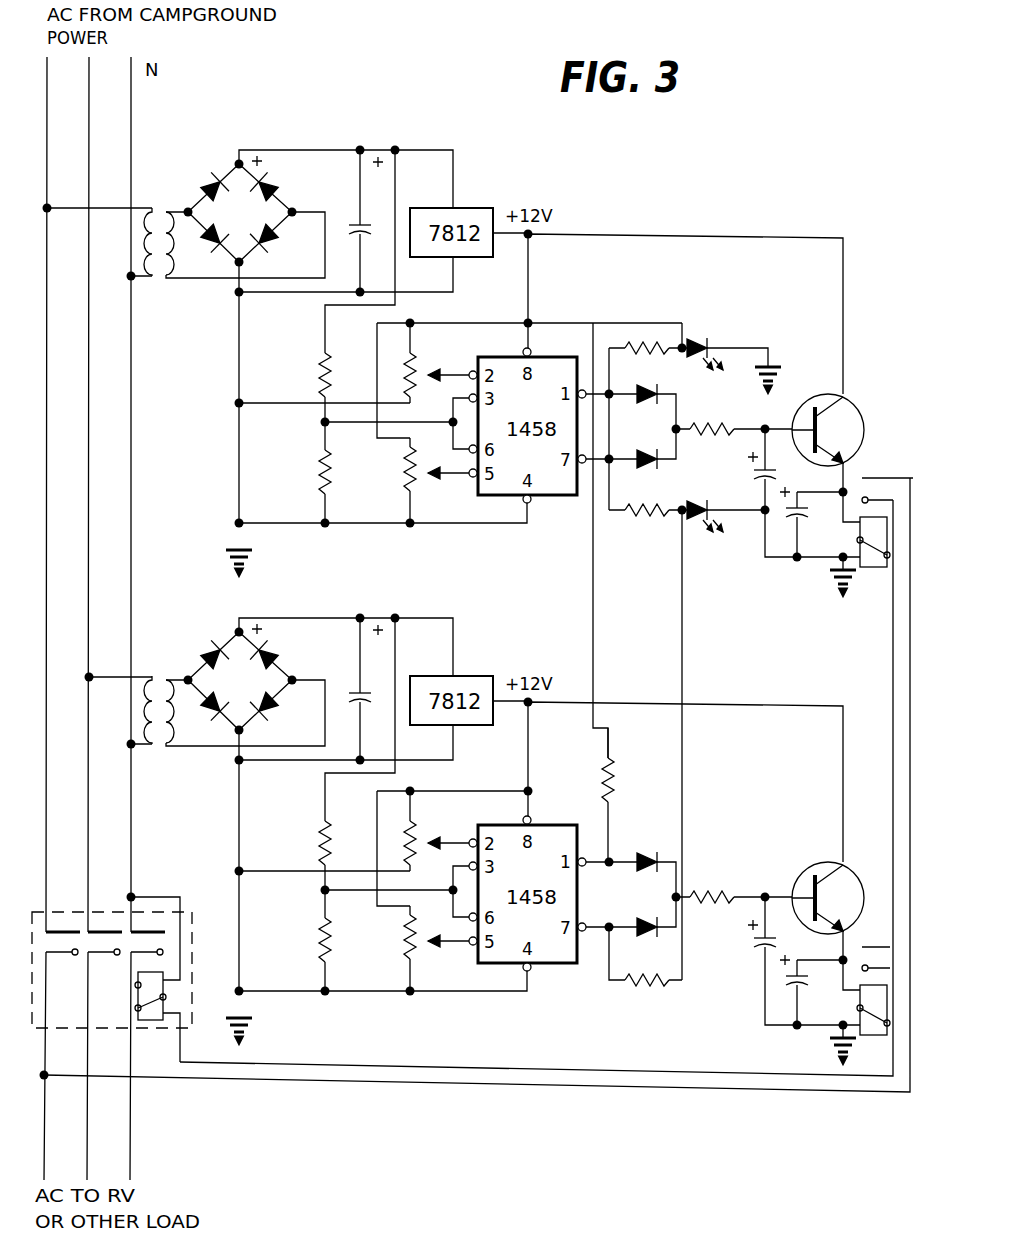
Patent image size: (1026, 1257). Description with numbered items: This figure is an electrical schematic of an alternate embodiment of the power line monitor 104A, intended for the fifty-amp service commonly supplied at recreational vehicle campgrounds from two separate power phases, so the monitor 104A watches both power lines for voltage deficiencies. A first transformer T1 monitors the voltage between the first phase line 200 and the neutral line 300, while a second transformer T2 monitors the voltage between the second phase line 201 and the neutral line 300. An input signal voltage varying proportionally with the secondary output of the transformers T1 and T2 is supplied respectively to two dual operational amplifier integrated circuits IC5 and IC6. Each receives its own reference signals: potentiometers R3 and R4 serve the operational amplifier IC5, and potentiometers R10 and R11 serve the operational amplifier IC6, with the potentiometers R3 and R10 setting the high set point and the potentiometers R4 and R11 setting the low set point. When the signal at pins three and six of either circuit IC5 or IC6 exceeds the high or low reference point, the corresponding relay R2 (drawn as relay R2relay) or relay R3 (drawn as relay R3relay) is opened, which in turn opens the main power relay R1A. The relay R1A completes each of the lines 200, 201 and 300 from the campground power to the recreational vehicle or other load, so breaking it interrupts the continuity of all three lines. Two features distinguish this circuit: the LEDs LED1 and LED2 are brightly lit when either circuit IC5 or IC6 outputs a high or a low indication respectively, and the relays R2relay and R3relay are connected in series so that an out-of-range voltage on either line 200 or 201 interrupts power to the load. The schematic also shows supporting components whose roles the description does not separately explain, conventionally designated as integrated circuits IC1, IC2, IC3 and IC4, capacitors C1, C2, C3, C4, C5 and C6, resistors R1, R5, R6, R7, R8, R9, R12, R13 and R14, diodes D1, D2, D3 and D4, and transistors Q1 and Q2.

The first power phase line 200 is at (47, 352).
The second power phase line 201 is at (89, 390).
The neutral line 300 is at (131, 452).
The power line monitor 104A is at (545, 1093).
The first transformer T1 is at (184, 230).
The second transformer T2 is at (205, 698).
The bridge rectifier IC1 is at (318, 221).
The bridge rectifier IC2 is at (318, 689).
The 7812 voltage regulator IC3 is at (626, 301).
The 7812 voltage regulator IC4 is at (626, 769).
The dual operational amplifier integrated circuit IC5 is at (467, 418).
The dual operational amplifier integrated circuit IC6 is at (467, 886).
The filter capacitor C1 is at (354, 221).
The capacitor C2 is at (784, 495).
The capacitor C3 is at (811, 522).
The filter capacitor C4 is at (354, 689).
The capacitor C5 is at (781, 963).
The capacitor C6 is at (811, 990).
The resistor R1 is at (306, 401).
The relay R2 is at (306, 486).
The potentiometer R3 is at (436, 363).
The potentiometer R4 is at (418, 480).
The resistor R5 is at (648, 332).
The resistor R6 is at (648, 527).
The resistor R7 is at (732, 417).
The resistor R8 is at (306, 869).
The resistor R9 is at (306, 954).
The potentiometer R10 is at (436, 831).
The potentiometer R11 is at (414, 948).
The resistor R12 is at (630, 795).
The resistor R13 is at (645, 973).
The resistor R14 is at (732, 884).
The diode D1 is at (649, 399).
The diode D2 is at (642, 447).
The diode D3 is at (642, 863).
The diode D4 is at (642, 916).
The LED LED1 is at (731, 353).
The LED LED2 is at (723, 537).
The NPN transistor Q1 is at (843, 445).
The NPN transistor Q2 is at (837, 910).
The relay R2relay is at (867, 536).
The relay R3relay is at (852, 1005).
The main power relay R1A is at (128, 976).